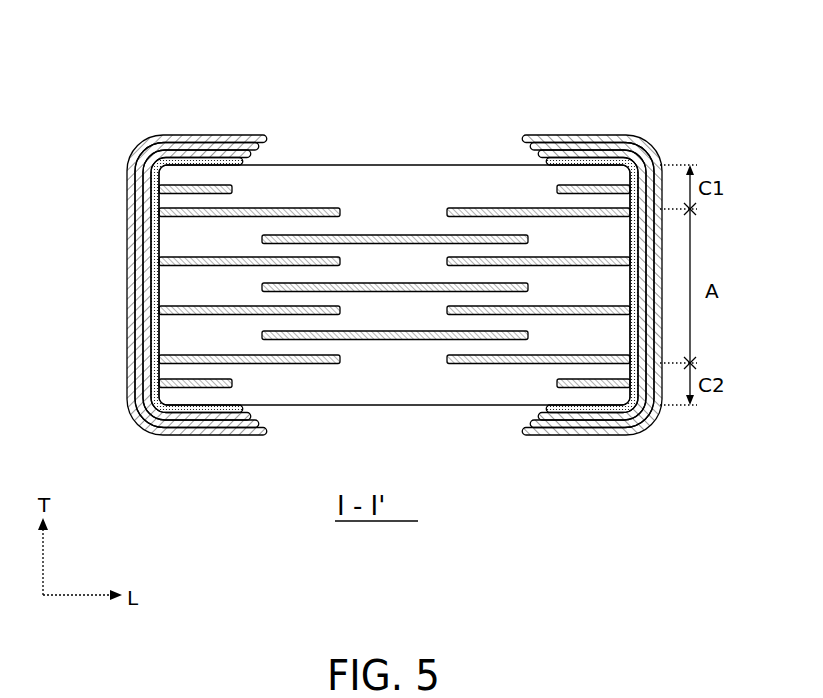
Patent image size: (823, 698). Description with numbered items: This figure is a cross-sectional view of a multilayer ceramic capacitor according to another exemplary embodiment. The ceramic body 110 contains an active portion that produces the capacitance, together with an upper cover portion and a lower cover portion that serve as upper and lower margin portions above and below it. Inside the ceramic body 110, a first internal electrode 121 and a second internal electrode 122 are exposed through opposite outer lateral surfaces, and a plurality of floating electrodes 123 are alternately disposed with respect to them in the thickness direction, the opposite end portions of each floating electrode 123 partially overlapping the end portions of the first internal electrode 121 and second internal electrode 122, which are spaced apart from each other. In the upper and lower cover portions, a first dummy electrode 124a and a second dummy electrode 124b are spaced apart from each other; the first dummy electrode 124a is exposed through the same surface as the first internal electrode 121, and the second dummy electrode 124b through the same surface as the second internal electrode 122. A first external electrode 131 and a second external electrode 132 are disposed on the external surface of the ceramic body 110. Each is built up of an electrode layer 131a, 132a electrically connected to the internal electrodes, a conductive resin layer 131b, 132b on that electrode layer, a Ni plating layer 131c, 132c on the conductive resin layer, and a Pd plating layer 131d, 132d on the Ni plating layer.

The ceramic body 110 is at (451, 157).
The first internal electrode 121 is at (165, 212).
The second internal electrode 122 is at (595, 214).
The floating electrode 123 is at (388, 236).
The first dummy electrode 124a is at (165, 189).
The second dummy electrode 124b is at (565, 190).
The first external electrode 131 is at (159, 222).
The electrode layer 131a is at (214, 233).
The conductive resin layer 131b is at (196, 153).
The Ni plating layer 131c is at (153, 141).
The Pd plating layer 131d is at (130, 160).
The second external electrode 132 is at (635, 222).
The electrode layer 132a is at (578, 233).
The conductive resin layer 132b is at (586, 145).
The Ni plating layer 132c is at (626, 141).
The Pd plating layer 132d is at (660, 137).